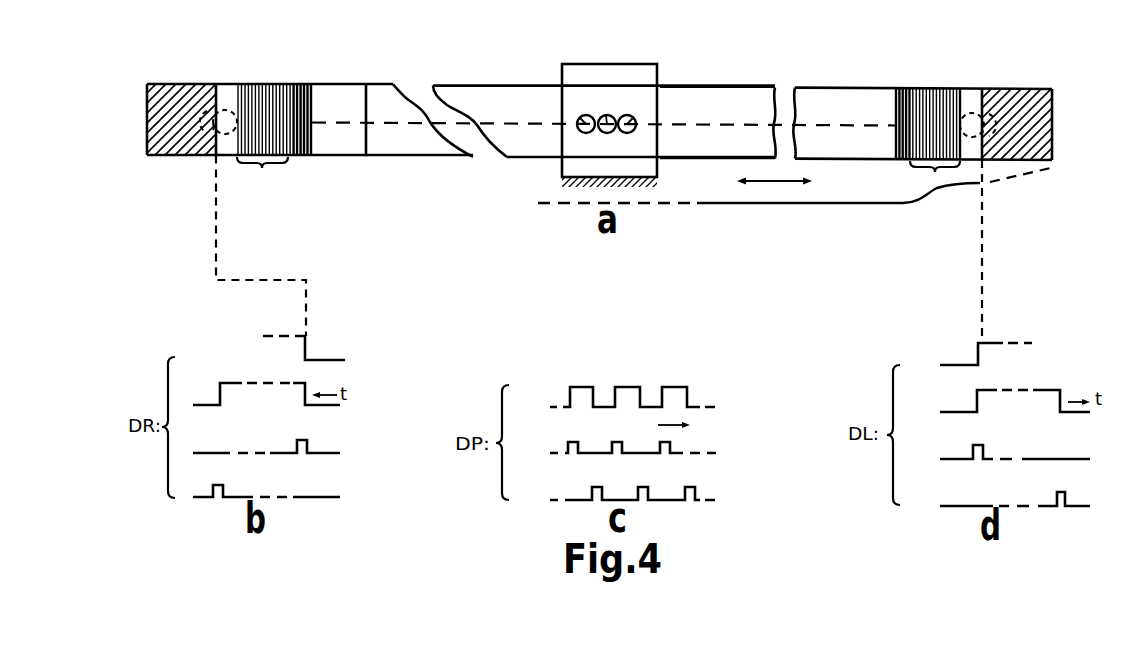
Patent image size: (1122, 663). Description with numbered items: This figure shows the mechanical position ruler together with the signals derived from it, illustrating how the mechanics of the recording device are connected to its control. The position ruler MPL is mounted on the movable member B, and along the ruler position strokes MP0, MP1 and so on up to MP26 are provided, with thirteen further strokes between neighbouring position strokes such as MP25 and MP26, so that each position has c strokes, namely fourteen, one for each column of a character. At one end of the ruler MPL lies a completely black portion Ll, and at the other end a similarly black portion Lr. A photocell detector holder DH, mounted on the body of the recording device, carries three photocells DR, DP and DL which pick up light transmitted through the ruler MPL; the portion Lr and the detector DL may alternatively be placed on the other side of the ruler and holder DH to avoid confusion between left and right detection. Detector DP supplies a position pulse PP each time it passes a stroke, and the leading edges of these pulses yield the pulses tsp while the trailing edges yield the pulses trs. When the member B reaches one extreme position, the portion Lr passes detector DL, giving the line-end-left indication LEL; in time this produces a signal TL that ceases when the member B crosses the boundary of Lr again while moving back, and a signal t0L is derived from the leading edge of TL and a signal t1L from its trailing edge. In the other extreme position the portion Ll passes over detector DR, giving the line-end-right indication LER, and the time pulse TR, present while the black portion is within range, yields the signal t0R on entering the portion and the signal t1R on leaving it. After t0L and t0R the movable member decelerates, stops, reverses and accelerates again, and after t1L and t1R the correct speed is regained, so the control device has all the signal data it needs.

The black portion Ll is at (165, 135).
The black portion Lr is at (1032, 137).
The position stroke MP26 is at (291, 82).
The position stroke MP25 is at (367, 84).
The position ruler MPL is at (718, 95).
The position stroke MP1 is at (904, 83).
The position stroke MP0 is at (961, 88).
The number of strokes per position c is at (598, 174).
The photocell detector holder DH is at (657, 172).
The photocell detector DR is at (581, 112).
The photocell detector DP is at (609, 112).
The photocell detector DL is at (635, 112).
The movable member B is at (856, 193).
The line-end-right LER is at (305, 348).
The line-end-left LEL is at (984, 353).
The time pulse TR is at (235, 392).
The time signal TL is at (1003, 398).
The position pulse PP is at (678, 392).
The signal t0R is at (285, 451).
The signal t1R is at (285, 493).
The signal t0L is at (995, 455).
The signal t1L is at (995, 501).
The set pulses tsp is at (612, 451).
The reset pulses trs is at (611, 491).